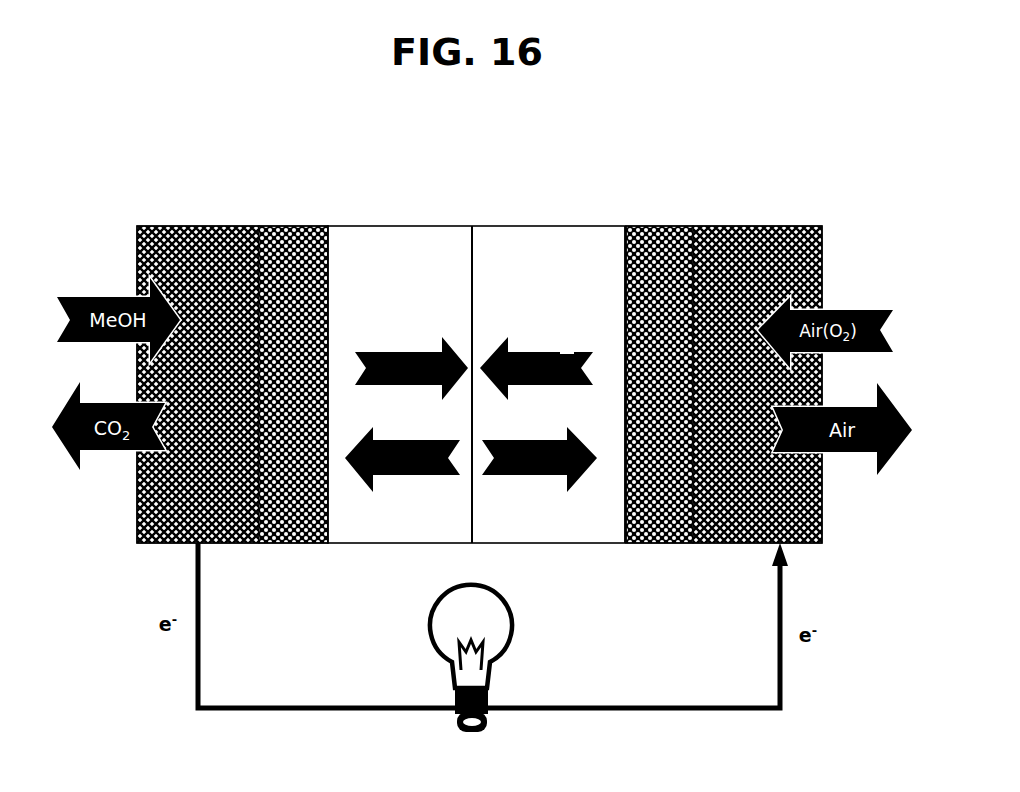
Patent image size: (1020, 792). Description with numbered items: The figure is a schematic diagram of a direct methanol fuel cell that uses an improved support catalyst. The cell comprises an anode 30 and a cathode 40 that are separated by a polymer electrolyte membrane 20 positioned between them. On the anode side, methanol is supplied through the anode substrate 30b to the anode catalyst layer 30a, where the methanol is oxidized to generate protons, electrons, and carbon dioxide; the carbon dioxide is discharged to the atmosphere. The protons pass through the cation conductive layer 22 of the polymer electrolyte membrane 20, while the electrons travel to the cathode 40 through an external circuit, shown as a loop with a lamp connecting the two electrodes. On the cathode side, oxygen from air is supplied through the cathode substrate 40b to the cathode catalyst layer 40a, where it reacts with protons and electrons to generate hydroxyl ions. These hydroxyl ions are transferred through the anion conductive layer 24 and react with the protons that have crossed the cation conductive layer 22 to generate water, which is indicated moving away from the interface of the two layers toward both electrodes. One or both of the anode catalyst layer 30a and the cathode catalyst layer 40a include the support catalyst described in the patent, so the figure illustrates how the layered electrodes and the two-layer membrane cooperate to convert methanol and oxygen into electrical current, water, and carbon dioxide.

The polymer electrolyte membrane 20 is at (582, 202).
The cation conductive layer 22 is at (397, 540).
The anion conductive layer 24 is at (575, 540).
The anode 30 is at (229, 607).
The anode catalyst layer 30a is at (291, 543).
The anode substrate 30b is at (226, 543).
The cathode 40 is at (739, 613).
The cathode catalyst layer 40a is at (662, 543).
The cathode substrate 40b is at (733, 543).